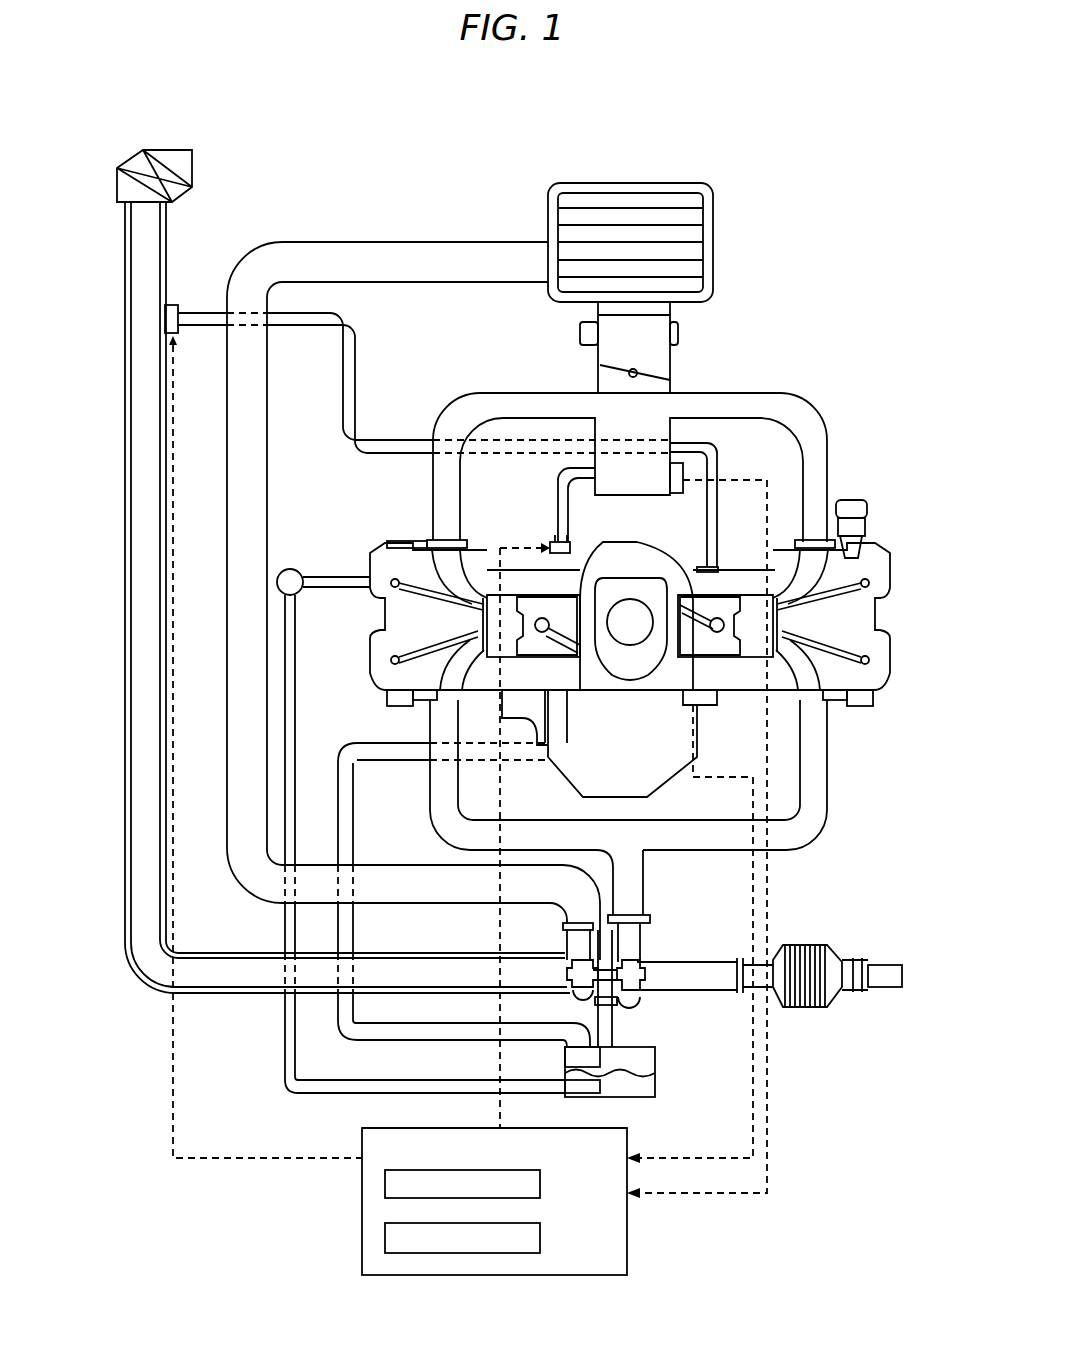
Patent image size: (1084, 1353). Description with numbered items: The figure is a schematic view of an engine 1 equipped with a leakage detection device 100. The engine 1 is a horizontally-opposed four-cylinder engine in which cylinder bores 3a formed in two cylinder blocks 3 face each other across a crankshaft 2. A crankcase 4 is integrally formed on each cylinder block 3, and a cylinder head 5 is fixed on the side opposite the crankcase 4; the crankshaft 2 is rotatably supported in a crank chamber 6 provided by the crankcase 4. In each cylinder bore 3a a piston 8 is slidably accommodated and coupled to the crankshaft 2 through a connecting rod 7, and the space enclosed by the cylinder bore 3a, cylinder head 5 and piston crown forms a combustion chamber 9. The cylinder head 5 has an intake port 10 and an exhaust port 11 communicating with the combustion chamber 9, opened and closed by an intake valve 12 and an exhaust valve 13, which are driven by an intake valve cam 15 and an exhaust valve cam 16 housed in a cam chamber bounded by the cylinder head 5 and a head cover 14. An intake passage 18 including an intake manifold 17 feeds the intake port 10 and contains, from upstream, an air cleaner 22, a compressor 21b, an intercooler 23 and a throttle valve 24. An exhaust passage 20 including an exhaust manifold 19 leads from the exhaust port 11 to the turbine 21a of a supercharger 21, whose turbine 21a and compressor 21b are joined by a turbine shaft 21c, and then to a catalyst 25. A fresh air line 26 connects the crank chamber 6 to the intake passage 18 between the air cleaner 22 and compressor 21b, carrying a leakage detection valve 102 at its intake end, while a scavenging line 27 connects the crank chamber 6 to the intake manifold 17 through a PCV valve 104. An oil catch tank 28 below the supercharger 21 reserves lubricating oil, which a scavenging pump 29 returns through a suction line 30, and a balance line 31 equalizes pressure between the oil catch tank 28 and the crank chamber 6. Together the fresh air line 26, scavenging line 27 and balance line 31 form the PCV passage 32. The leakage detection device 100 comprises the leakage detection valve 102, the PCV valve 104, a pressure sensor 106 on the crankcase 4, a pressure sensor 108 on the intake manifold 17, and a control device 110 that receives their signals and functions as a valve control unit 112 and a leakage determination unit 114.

The engine 1 is at (233, 140).
The crankshaft 2 is at (637, 578).
The cylinder block 3 is at (530, 542).
The cylinder bore 3a is at (512, 598).
The crankcase 4 is at (602, 692).
The cylinder head 5 is at (472, 553).
The crank chamber 6 is at (565, 677).
The connecting rod 7 is at (542, 640).
The piston 8 is at (522, 650).
The combustion chamber 9 is at (492, 590).
The intake port 10 is at (445, 590).
The exhaust port 11 is at (442, 674).
The intake valve 12 is at (455, 612).
The exhaust valve 13 is at (460, 655).
The head cover 14 is at (373, 628).
The intake valve cam 15 is at (391, 584).
The exhaust valve cam 16 is at (391, 662).
The intake manifold 17 is at (433, 513).
The intake passage 18 is at (353, 242).
The exhaust manifold 19 is at (430, 805).
The exhaust passage 20 is at (845, 960).
The supercharger 21 is at (639, 965).
The turbine 21a is at (645, 988).
The compressor 21b is at (565, 950).
The turbine shaft 21c is at (660, 960).
The air cleaner 22 is at (155, 150).
The intercooler 23 is at (625, 183).
The throttle valve 24 is at (665, 378).
The catalyst 25 is at (807, 1007).
The fresh air line 26 is at (717, 462).
The scavenging line 27 is at (557, 490).
The oil catch tank 28 is at (565, 1072).
The scavenging pump 29 is at (295, 568).
The suction line 30 is at (435, 1080).
The balance line 31 is at (385, 743).
The PCV passage 32 is at (382, 406).
The leakage detection device 100 is at (541, 1179).
The leakage detection valve 102 is at (183, 305).
The PCV valve 104 is at (573, 542).
The pressure sensor 106 is at (708, 707).
The pressure sensor 108 is at (680, 495).
The control device 110 is at (627, 1223).
The valve control unit 112 is at (540, 1185).
The leakage determination unit 114 is at (540, 1238).